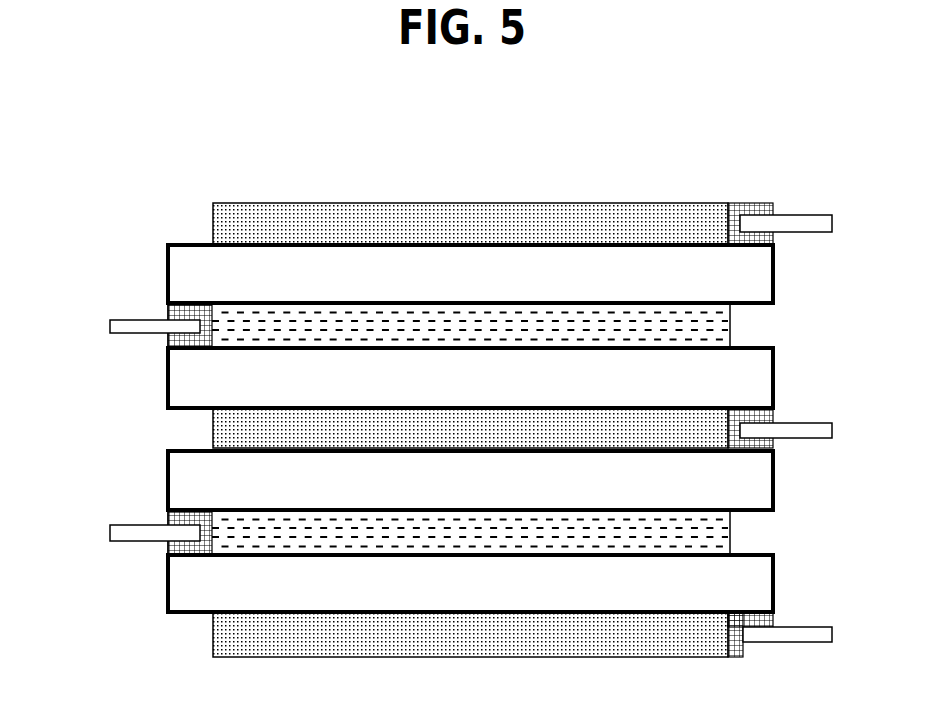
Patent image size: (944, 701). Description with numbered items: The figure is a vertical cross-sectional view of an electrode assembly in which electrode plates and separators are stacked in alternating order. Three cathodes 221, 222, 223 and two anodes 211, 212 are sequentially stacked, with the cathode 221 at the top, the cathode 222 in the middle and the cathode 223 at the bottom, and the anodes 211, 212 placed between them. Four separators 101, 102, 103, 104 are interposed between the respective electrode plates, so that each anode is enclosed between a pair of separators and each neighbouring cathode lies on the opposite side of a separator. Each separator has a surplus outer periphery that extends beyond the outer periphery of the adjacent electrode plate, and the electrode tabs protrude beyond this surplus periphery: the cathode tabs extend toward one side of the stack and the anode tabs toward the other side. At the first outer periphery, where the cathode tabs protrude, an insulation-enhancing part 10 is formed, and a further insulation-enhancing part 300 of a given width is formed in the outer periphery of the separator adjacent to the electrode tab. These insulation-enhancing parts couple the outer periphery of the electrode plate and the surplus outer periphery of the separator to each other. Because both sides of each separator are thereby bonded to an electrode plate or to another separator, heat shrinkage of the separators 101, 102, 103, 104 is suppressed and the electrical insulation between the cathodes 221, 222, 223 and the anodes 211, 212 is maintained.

The insulation-enhancing part 10 is at (503, 377).
The insulation-enhancing part 300 is at (798, 187).
The separator 101 is at (210, 278).
The separator 102 is at (210, 380).
The separator 103 is at (210, 482).
The separator 104 is at (210, 583).
The anode 211 is at (730, 328).
The anode 212 is at (730, 533).
The cathode 221 is at (225, 217).
The cathode 222 is at (228, 423).
The cathode 223 is at (228, 628).